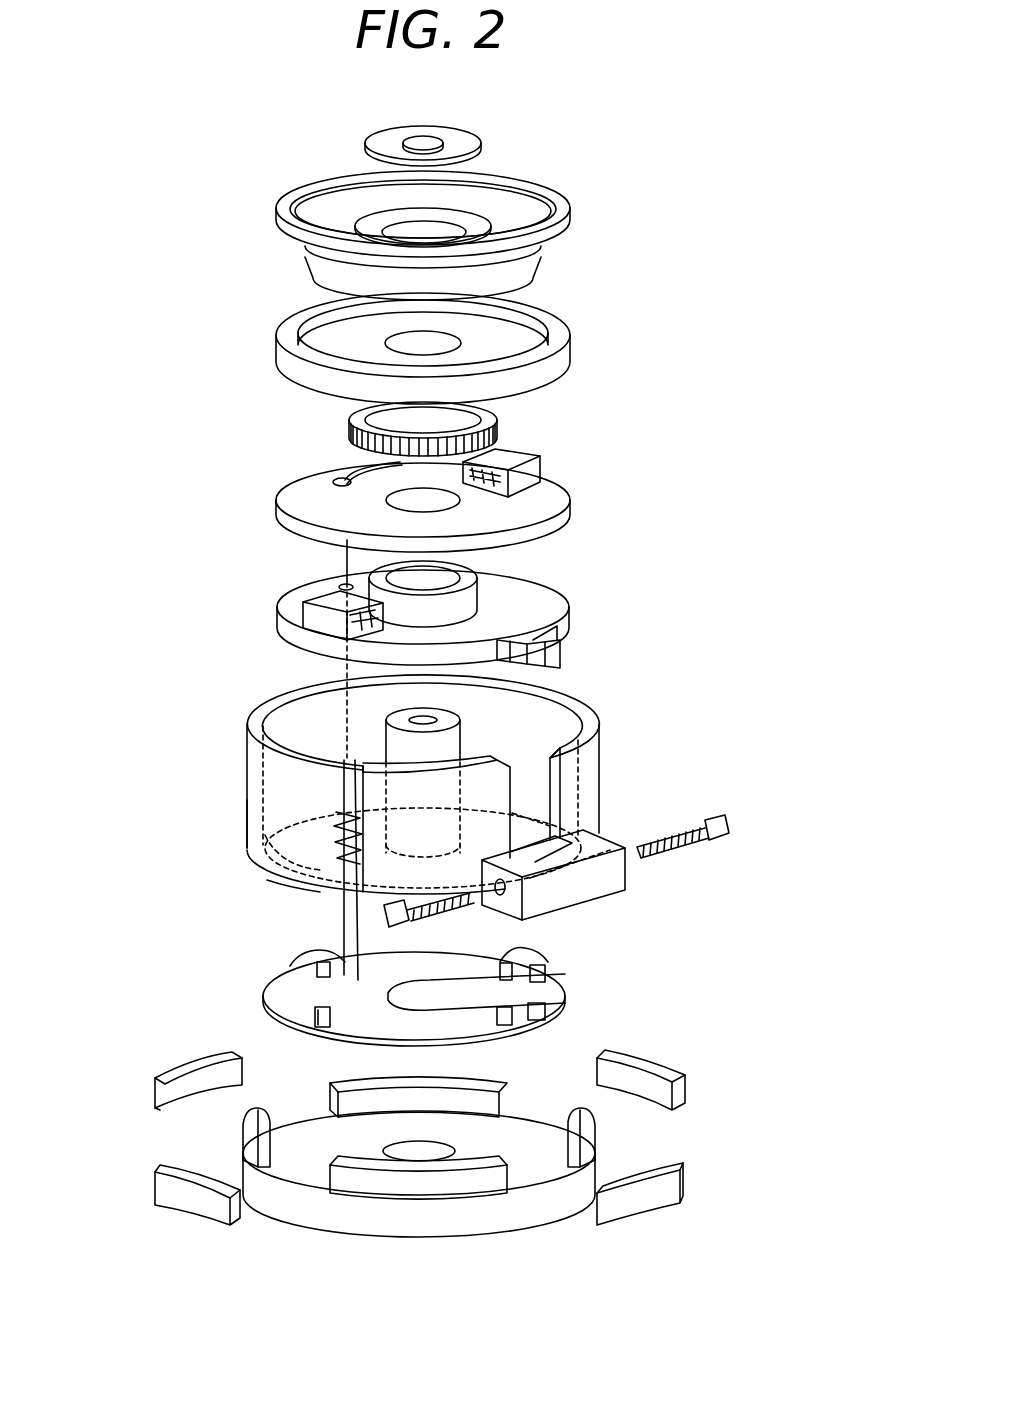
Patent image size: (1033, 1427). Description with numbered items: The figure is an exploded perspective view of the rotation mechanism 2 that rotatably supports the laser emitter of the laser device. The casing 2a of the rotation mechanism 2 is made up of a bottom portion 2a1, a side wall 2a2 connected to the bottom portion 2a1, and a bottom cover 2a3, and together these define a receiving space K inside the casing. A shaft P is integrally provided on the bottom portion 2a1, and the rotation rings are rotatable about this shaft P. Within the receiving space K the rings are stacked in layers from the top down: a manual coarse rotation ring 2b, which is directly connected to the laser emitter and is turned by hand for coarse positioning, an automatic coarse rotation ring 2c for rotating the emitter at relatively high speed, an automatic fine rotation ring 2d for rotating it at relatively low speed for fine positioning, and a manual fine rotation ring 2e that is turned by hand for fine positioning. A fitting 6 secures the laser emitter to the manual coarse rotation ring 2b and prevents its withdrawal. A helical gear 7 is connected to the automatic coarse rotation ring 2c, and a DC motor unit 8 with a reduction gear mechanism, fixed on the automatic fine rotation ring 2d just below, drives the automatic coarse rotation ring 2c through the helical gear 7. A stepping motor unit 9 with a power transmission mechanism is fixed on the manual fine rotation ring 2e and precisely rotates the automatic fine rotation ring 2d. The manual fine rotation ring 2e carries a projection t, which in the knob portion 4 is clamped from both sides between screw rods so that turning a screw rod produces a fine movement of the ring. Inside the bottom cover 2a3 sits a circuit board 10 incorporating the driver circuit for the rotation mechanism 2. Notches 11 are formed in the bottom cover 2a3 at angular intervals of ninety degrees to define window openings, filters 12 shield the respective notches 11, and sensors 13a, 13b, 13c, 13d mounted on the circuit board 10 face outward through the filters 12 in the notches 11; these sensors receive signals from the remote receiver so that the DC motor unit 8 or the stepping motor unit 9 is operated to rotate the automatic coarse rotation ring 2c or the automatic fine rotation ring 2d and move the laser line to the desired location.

The rotation mechanism 2 is at (732, 660).
The casing 2a is at (600, 748).
The bottom portion 2a1 is at (267, 890).
The side wall 2a2 is at (247, 833).
The bottom cover 2a3 is at (462, 1212).
The manual coarse rotation ring 2b is at (566, 213).
The automatic coarse rotation ring 2c is at (557, 318).
The automatic fine rotation ring 2d is at (541, 507).
The manual fine rotation ring 2e is at (541, 603).
The knob portion 4 is at (608, 833).
The fitting 6 is at (488, 139).
The helical gear 7 is at (500, 419).
The DC motor unit 8 is at (536, 458).
The stepping motor unit 9 is at (306, 592).
The circuit board 10 is at (450, 983).
The notches 11 is at (302, 1100).
The filters 12 is at (156, 1073).
The sensor 13a is at (577, 988).
The sensor 13b is at (548, 952).
The sensor 13c is at (312, 963).
The sensor 13d is at (268, 999).
The receiving space K is at (516, 736).
The shaft P is at (396, 745).
The projection t is at (561, 650).